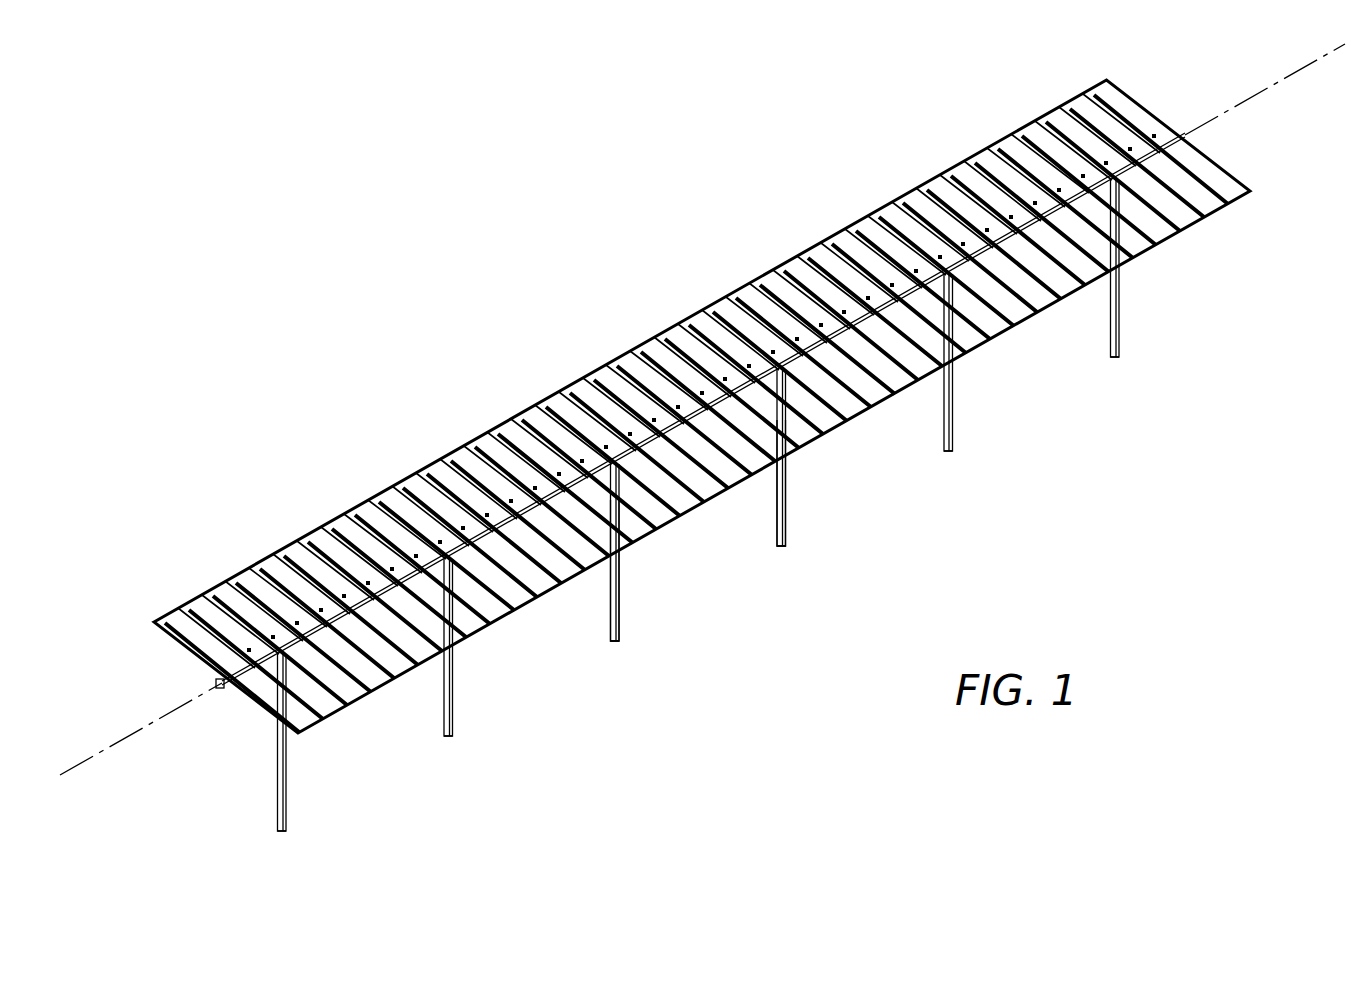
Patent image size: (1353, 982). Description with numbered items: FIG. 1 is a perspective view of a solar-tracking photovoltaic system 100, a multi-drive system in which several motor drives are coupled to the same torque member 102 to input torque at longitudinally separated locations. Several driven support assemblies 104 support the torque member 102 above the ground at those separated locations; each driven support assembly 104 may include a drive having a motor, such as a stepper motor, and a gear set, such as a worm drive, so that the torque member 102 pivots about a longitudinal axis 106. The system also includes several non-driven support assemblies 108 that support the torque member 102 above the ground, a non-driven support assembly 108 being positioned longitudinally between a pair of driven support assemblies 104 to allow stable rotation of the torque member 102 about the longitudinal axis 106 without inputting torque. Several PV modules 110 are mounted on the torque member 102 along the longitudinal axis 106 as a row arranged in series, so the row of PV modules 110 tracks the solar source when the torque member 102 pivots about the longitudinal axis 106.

The solar-tracking photovoltaic system 100 is at (470, 214).
The torque member 102 is at (540, 533).
The driven support assembly 104 is at (955, 418).
The longitudinal axis 106 is at (1262, 88).
The non-driven support assembly 108 is at (782, 508).
The PV module 110 is at (777, 288).